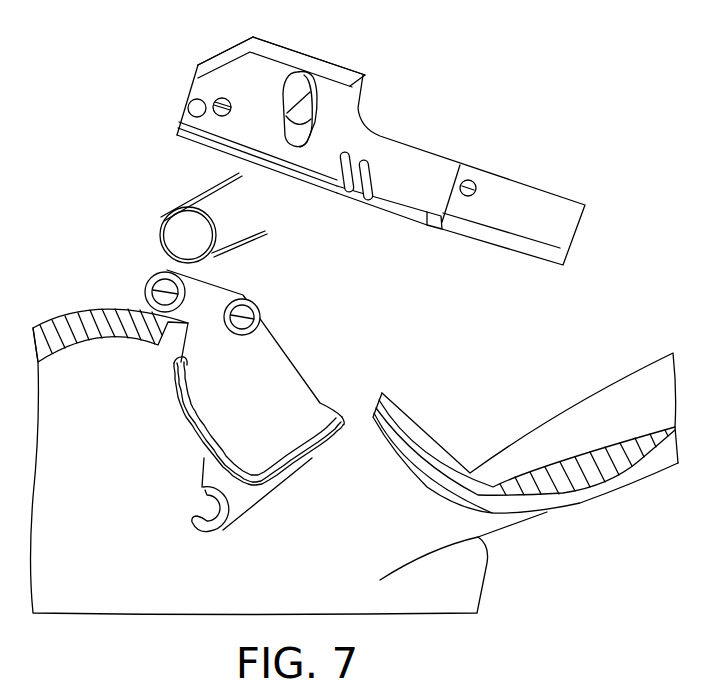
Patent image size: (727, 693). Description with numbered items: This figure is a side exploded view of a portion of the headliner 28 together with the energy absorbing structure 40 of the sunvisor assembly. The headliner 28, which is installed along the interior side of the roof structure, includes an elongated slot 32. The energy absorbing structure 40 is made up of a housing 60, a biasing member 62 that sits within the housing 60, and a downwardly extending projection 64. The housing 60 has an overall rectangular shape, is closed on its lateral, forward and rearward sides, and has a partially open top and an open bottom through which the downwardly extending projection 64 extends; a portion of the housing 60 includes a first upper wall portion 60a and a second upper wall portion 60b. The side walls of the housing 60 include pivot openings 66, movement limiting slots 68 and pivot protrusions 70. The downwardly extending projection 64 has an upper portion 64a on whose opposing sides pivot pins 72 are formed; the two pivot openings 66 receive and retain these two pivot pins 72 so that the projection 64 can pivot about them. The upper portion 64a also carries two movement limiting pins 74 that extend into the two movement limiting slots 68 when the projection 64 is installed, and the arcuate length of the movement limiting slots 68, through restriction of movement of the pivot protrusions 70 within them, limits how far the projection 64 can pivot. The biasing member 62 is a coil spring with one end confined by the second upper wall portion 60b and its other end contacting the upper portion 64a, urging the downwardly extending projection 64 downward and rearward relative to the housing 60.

The headliner 28 is at (73, 330).
The elongated slot 32 is at (378, 400).
The energy absorbing structure 40 is at (450, 155).
The housing 60 is at (348, 78).
The first upper wall portion 60a is at (301, 52).
The second upper wall portion 60b is at (232, 48).
The biasing member 62 is at (165, 220).
The downwardly extending projection 64 is at (250, 498).
The upper portion 64a is at (250, 383).
The pivot openings 66 is at (233, 110).
The movement limiting slots 68 is at (300, 145).
The pivot protrusions 70 is at (197, 108).
The pivot pins 72 is at (167, 288).
The movement limiting pins 74 is at (252, 312).